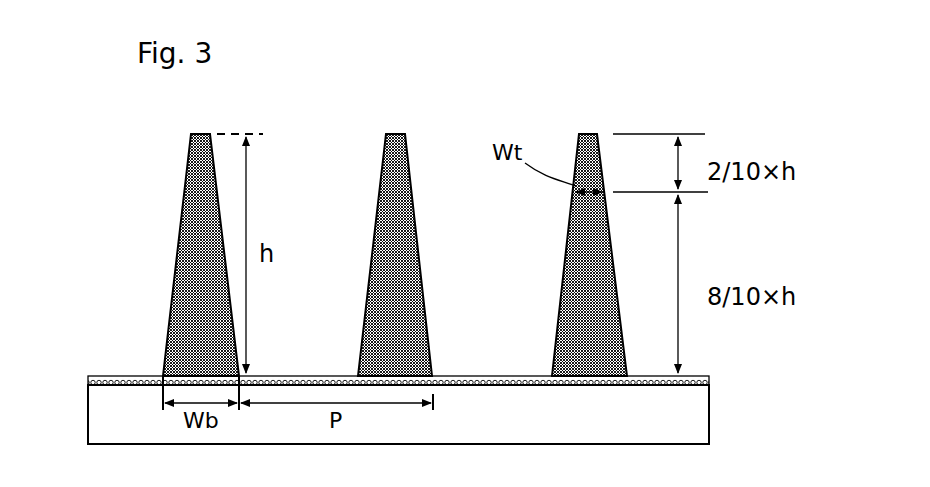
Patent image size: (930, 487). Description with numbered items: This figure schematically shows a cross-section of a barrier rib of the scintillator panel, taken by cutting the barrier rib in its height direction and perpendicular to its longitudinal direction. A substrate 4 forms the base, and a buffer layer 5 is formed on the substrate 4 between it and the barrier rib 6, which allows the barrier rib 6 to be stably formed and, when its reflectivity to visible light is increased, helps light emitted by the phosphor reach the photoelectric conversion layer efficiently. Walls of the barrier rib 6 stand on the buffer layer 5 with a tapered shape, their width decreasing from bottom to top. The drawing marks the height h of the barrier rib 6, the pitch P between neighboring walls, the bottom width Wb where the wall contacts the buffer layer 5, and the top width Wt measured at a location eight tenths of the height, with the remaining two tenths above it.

The substrate 4 is at (120, 423).
The buffer layer 5 is at (133, 381).
The barrier rib 6 is at (190, 232).